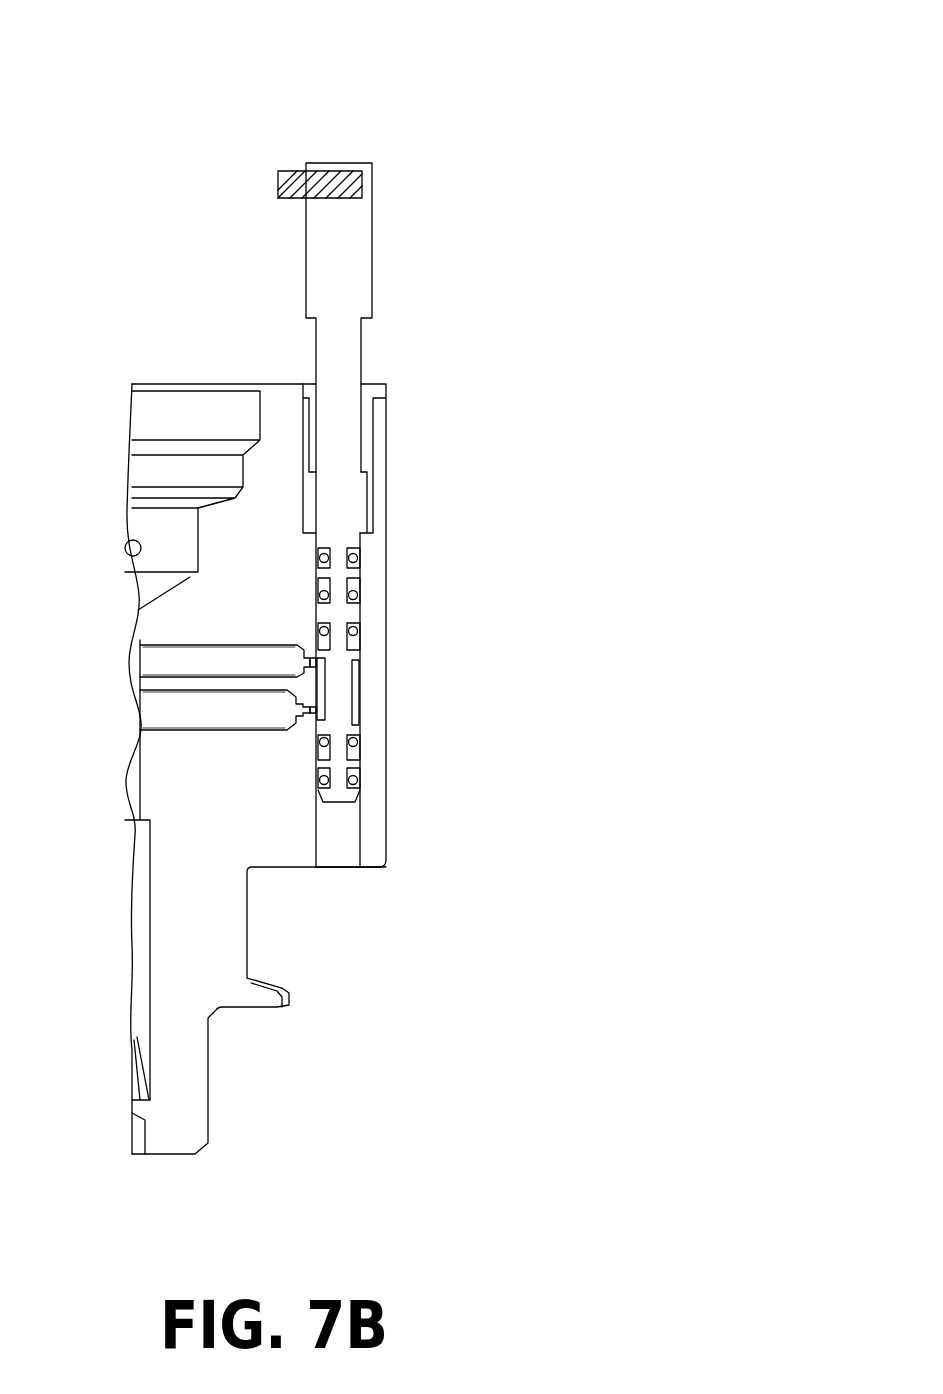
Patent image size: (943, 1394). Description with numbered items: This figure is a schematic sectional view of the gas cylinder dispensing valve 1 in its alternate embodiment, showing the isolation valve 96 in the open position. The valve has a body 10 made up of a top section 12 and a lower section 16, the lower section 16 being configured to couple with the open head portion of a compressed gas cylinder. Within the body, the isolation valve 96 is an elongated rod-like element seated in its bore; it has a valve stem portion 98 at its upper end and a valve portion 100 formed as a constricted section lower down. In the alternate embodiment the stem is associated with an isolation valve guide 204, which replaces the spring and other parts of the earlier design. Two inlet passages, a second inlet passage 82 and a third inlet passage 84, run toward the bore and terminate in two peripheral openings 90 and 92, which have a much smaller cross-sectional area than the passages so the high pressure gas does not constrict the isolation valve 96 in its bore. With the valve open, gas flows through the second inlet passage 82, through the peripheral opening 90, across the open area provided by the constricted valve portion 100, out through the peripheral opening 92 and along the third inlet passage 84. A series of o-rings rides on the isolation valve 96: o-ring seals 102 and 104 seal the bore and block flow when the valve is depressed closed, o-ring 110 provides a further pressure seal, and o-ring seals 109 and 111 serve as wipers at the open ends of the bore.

The gas cylinder dispensing valve 1 is at (502, 63).
The body 10 is at (400, 981).
The top section 12 is at (165, 378).
The lower section 16 is at (215, 1087).
The second inlet passage 82 is at (228, 655).
The third inlet passage 84 is at (237, 729).
The peripheral opening 90 is at (312, 652).
The peripheral opening 92 is at (312, 717).
The isolation valve 96 is at (418, 316).
The valve stem portion 98 is at (372, 232).
The valve portion 100 is at (337, 715).
The o-ring seal 102 is at (357, 595).
The o-ring seal 104 is at (358, 640).
The o-ring seal 109 is at (357, 558).
The o-ring 110 is at (357, 742).
The o-ring seal 111 is at (357, 780).
The isolation valve guide 204 is at (295, 170).